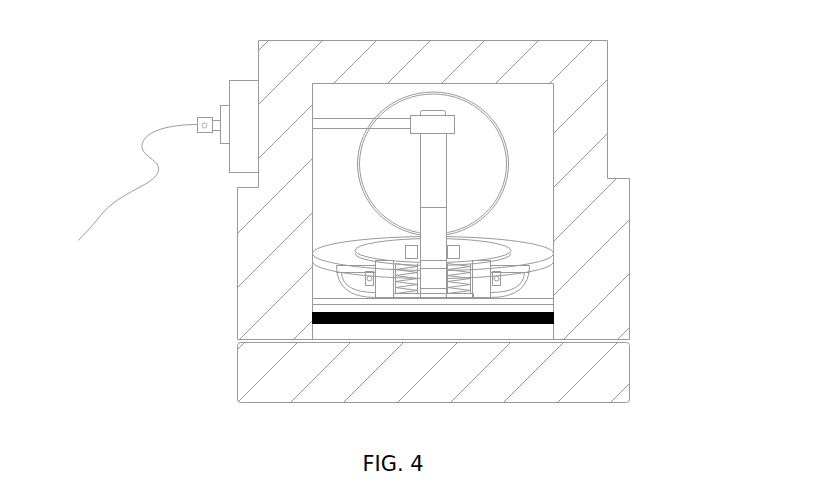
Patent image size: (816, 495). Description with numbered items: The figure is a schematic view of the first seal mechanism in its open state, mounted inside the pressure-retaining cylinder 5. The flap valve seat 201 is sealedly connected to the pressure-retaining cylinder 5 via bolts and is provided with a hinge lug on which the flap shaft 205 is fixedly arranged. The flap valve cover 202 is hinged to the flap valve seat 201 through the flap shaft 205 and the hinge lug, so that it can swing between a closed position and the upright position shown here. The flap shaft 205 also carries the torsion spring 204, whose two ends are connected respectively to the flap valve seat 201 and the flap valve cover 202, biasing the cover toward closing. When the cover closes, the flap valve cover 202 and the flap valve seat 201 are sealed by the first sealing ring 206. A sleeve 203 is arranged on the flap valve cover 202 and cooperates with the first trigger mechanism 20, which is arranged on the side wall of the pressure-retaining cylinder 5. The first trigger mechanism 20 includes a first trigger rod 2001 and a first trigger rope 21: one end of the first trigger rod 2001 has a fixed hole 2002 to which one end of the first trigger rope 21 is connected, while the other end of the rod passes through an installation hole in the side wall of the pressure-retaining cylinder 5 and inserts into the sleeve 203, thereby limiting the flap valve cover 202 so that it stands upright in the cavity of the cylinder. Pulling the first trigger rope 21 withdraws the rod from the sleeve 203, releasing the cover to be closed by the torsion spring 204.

The pressure-retaining cylinder 5 is at (552, 65).
The first trigger mechanism 20 is at (238, 97).
The first trigger rod 2001 is at (343, 124).
The fixed hole 2002 is at (198, 123).
The first trigger rope 21 is at (128, 188).
The flap valve seat 201 is at (540, 285).
The flap valve cover 202 is at (485, 193).
The sleeve 203 is at (443, 126).
The torsion spring 204 is at (358, 250).
The flap shaft 205 is at (370, 278).
The first sealing ring 206 is at (312, 320).